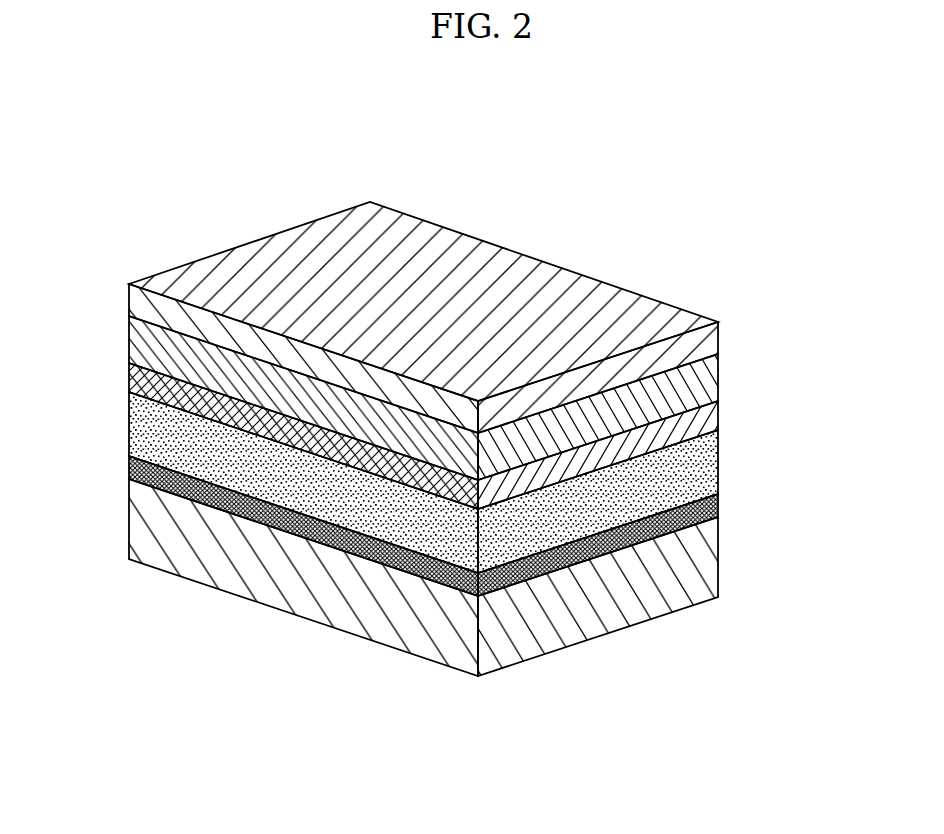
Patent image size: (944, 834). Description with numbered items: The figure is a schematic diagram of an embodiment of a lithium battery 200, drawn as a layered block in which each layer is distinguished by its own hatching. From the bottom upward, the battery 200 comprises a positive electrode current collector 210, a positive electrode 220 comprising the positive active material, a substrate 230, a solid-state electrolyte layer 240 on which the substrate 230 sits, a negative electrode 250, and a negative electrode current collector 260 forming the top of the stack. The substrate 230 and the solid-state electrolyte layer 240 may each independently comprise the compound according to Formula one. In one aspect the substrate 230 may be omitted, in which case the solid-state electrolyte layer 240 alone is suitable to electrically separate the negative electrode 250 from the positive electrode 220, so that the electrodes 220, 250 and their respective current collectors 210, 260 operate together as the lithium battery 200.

The battery 200 is at (116, 157).
The positive electrode current collector 210 is at (720, 587).
The positive electrode 220 is at (720, 503).
The substrate 230 is at (720, 458).
The solid-state electrolyte layer 240 is at (720, 413).
The negative electrode 250 is at (720, 375).
The negative electrode current collector 260 is at (720, 322).